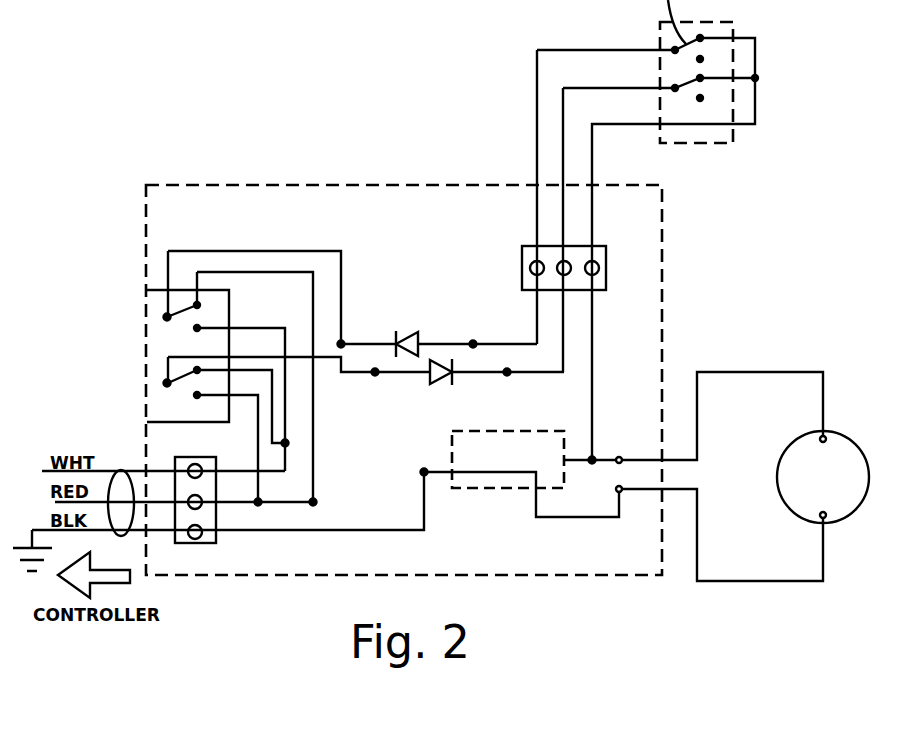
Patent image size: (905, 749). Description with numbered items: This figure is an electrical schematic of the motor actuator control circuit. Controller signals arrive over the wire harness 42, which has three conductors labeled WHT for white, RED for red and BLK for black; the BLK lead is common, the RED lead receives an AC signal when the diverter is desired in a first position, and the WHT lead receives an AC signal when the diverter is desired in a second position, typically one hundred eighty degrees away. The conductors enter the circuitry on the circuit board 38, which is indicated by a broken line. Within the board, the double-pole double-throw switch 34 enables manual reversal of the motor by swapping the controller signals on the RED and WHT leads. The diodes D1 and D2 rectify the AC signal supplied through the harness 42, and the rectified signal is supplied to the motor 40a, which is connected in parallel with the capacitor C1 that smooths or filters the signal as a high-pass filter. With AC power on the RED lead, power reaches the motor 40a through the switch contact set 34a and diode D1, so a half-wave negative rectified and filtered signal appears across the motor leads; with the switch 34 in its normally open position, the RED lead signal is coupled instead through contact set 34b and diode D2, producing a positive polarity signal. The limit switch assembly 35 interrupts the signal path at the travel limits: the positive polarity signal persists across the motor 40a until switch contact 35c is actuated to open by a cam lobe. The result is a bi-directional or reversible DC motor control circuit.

The double-pole double-throw switch 34 is at (230, 304).
The switch contact set 34a is at (167, 316).
The switch contact set 34b is at (167, 381).
The limit switch assembly 35 is at (713, 22).
The switch contact 35c is at (676, 84).
The circuit board 38 is at (317, 578).
The motor 40a is at (789, 443).
The wire harness 42 is at (122, 470).
The diode D1 is at (438, 334).
The diode D2 is at (366, 384).
The capacitor C1 is at (510, 490).